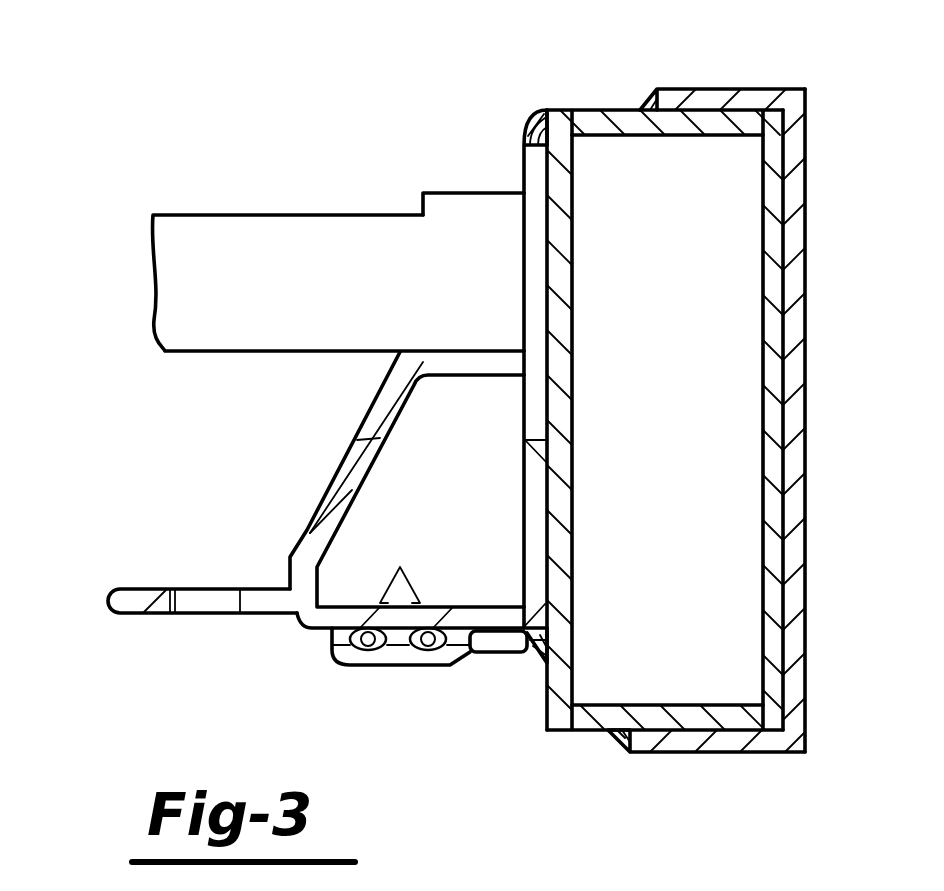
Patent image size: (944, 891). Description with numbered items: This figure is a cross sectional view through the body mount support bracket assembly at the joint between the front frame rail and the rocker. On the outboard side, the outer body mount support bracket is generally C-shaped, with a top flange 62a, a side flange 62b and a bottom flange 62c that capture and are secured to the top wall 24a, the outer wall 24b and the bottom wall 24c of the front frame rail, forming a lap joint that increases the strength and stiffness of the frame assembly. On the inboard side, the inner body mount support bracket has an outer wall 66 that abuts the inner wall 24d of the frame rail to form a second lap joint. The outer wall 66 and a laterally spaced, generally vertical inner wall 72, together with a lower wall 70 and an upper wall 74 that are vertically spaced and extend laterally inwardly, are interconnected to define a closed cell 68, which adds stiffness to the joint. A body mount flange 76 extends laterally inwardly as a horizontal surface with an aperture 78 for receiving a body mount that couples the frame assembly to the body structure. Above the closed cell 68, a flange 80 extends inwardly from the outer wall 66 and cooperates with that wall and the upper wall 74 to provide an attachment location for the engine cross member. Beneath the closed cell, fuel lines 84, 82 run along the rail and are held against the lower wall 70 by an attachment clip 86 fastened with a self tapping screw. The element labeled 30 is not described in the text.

The support block 30 is at (218, 232).
The flange 80 is at (452, 200).
The outer wall 66 is at (530, 167).
The top wall 24a is at (627, 118).
The outer wall 24b is at (763, 418).
The bottom wall 24c is at (620, 717).
The inner wall 24d is at (642, 487).
The top flange 62a is at (707, 100).
The side flange 62b is at (797, 461).
The bottom flange 62c is at (728, 740).
The closed cell 68 is at (455, 515).
The inner wall 72 is at (340, 468).
The upper wall 74 is at (423, 362).
The body mount flange 76 is at (125, 590).
The aperture 78 is at (192, 610).
The lower wall 70 is at (330, 617).
The fuel line 84 is at (333, 643).
The attachment clip 86 is at (398, 655).
The fuel line 82 is at (443, 665).